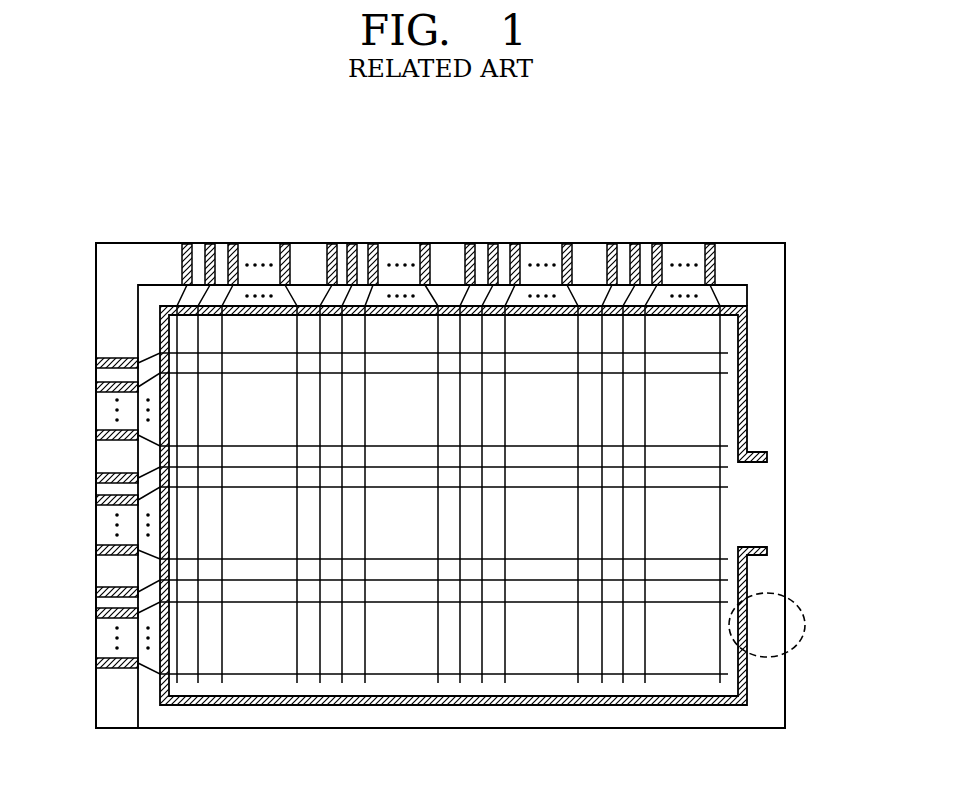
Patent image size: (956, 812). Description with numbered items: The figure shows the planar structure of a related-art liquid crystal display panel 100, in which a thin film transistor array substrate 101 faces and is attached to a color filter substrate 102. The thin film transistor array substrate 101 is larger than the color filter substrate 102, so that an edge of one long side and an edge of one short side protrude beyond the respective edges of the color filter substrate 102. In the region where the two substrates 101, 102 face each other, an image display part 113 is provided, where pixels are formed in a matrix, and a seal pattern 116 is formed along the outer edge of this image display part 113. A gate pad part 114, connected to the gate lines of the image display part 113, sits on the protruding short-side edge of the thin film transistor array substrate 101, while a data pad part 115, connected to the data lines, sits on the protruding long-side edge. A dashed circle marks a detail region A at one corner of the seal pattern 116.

The liquid crystal display device 100 is at (119, 220).
The thin film transistor array substrate 101 is at (772, 265).
The color filter substrate 102 is at (772, 323).
The image display part 113 is at (420, 421).
The gate pad part 114 is at (87, 670).
The data pad part 115 is at (720, 225).
The seal pattern 116 is at (742, 383).
The detail region A is at (778, 587).